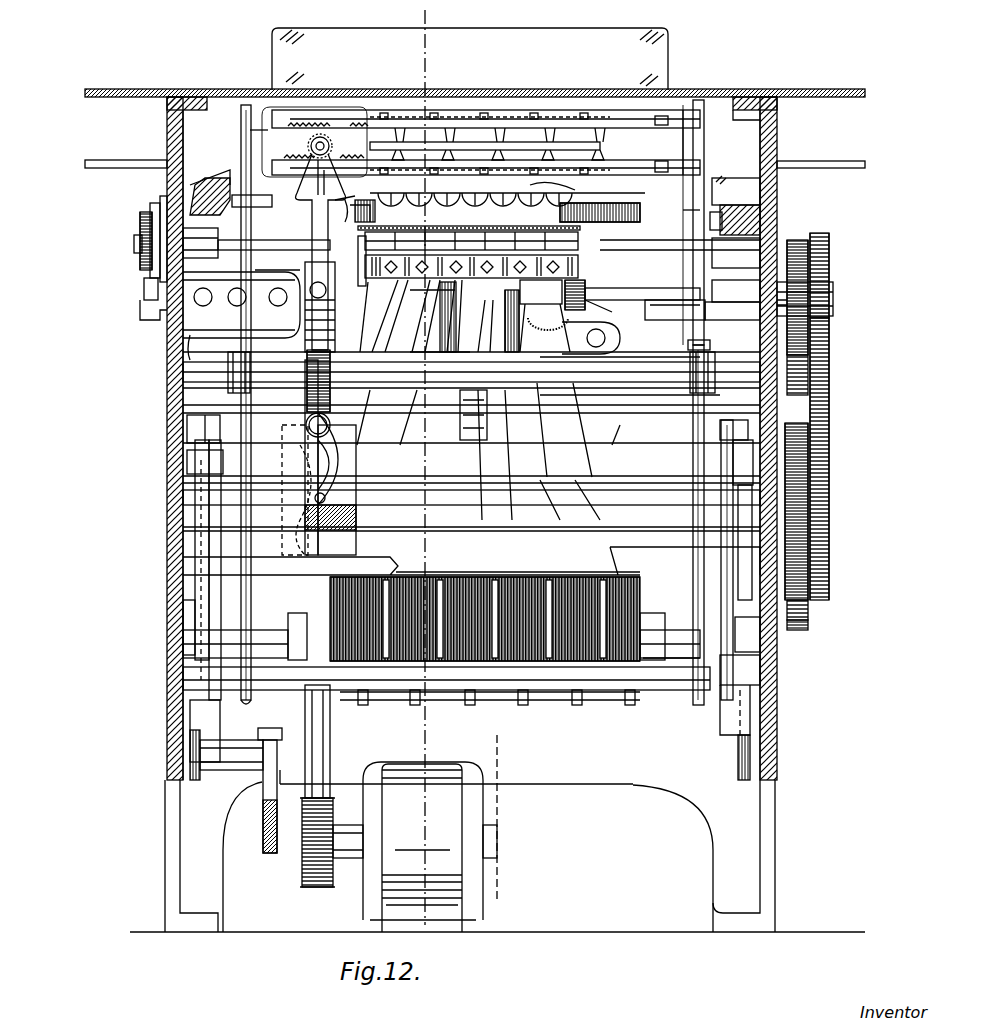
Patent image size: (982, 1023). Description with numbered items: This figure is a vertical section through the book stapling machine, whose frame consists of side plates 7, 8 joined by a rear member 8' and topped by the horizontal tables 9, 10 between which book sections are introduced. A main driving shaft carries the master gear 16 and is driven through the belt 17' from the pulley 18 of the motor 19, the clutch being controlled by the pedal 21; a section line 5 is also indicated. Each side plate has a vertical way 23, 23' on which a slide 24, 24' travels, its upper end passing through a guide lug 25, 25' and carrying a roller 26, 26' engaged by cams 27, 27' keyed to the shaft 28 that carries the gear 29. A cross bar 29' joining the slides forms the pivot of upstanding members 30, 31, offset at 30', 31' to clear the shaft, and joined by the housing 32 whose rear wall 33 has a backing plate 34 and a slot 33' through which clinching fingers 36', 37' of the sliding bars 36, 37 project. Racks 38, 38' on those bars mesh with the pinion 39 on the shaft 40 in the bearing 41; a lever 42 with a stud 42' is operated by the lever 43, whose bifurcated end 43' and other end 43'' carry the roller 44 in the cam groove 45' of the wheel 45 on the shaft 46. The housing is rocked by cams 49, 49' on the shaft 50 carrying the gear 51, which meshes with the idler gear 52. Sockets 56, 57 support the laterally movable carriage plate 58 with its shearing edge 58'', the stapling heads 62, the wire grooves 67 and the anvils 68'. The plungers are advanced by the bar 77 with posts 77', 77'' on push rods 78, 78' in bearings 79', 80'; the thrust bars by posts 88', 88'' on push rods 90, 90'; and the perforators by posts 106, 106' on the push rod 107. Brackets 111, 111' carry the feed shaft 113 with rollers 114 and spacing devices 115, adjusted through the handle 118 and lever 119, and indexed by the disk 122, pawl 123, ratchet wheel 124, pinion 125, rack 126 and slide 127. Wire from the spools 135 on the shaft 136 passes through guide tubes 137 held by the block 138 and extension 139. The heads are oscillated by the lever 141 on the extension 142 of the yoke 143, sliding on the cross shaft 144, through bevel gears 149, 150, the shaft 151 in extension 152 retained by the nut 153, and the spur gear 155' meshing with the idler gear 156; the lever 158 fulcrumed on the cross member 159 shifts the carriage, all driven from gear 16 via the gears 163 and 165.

The section line 5 is at (522, 891).
The side plate 7 is at (166, 373).
The side plate 8 is at (768, 438).
The frame member 8' is at (543, 453).
The table 9 is at (836, 165).
The table 10 is at (771, 92).
The gear 16 is at (832, 312).
The belt 17' is at (332, 741).
The pulley 18 is at (303, 868).
The motor 19 is at (430, 847).
The pedal 21 is at (263, 848).
The vertical way 23 is at (197, 768).
The vertical way 23' is at (730, 758).
The slide 24 is at (226, 735).
The slide 24' is at (724, 703).
The guide lug 25 is at (176, 429).
The guide lug 25' is at (700, 432).
The roller 26 is at (178, 462).
The roller 26' is at (704, 462).
The cam 27 is at (177, 570).
The cam 27' is at (704, 560).
The shaft 28 is at (471, 561).
The gear 29 is at (816, 608).
The cross bar 29' is at (446, 678).
The upstanding member 30 is at (245, 636).
The offset 30' is at (259, 404).
The upstanding member 31 is at (670, 676).
The offset 31' is at (667, 625).
The housing 32 is at (700, 150).
The rear wall 33 is at (496, 122).
The longitudinal slot 33' is at (497, 141).
The backing plate 34 is at (668, 74).
The clinching bar 36 is at (700, 143).
The clinching fingers 36' is at (490, 119).
The clinching bar 37 is at (509, 163).
The clinching fingers 37' is at (498, 144).
The rack 38 is at (315, 122).
The rack 38' is at (316, 151).
The pinion 39 is at (323, 136).
The shaft 40 is at (332, 146).
The bearing 41 is at (321, 252).
The lever 42 is at (352, 190).
The stud 42' is at (339, 292).
The lever 43 is at (336, 369).
The bifurcated end 43' is at (338, 307).
The lever end 43'' is at (296, 490).
The roller 44 is at (330, 504).
The wheel 45 is at (344, 457).
The cam groove 45' is at (353, 464).
The shaft 46 is at (471, 503).
The cam 49 is at (471, 372).
The cam 49' is at (688, 372).
The shaft 50 is at (630, 378).
The gear 51 is at (808, 373).
The idler gear 52 is at (802, 466).
The rectangular socket 56 is at (210, 196).
The rectangular socket 57 is at (736, 190).
The plate or carriage 58 is at (469, 221).
The shearing edge 58'' is at (600, 210).
The stapling heads 62 is at (507, 192).
The grooves 67 is at (446, 212).
The anvils 68' is at (562, 187).
The horizontal bar 77 is at (252, 168).
The post 77' is at (277, 263).
The post 77'' is at (680, 253).
The push rod 78 is at (241, 305).
The push rod 78' is at (674, 316).
The bearing 79' is at (207, 309).
The bearing 80' is at (732, 319).
The post 88' is at (211, 180).
The post 88'' is at (680, 225).
The push rod 90 is at (257, 311).
The push rod 90' is at (736, 291).
The post 106 is at (200, 251).
The post 106' is at (759, 207).
The push rod 107 is at (196, 346).
The bracket member 111 is at (381, 316).
The bracket member 111' is at (491, 237).
The shaft 113 is at (270, 244).
The rollers 114 is at (416, 316).
The spacing devices 115 is at (448, 316).
The handle 118 is at (395, 316).
The lever 119 is at (353, 261).
The disk 122 is at (165, 200).
The pawl 123 is at (160, 206).
The ratchet wheel 124 is at (150, 232).
The pinion 125 is at (146, 256).
The rack 126 is at (146, 290).
The slide 127 is at (144, 312).
The spools 135 is at (502, 712).
The shaft 136 is at (662, 660).
The guide tubes 137 is at (478, 451).
The horizontal block 138 is at (485, 574).
The horizontal extension 139 is at (576, 270).
The lever 141 is at (605, 338).
The extension 142 is at (620, 367).
The yoke 143 is at (512, 341).
The cross shaft 144 is at (471, 415).
The bevel gear 149 is at (471, 365).
The bevel gear 150 is at (582, 286).
The shaft 151 is at (611, 310).
The extension 152 is at (545, 316).
The nut 153 is at (476, 326).
The spur gear 155' is at (828, 285).
The idler gear 156 is at (822, 262).
The lever 158 is at (470, 425).
The cross member 159 is at (620, 440).
The gear 163 is at (830, 400).
The idler gear 165 is at (808, 626).